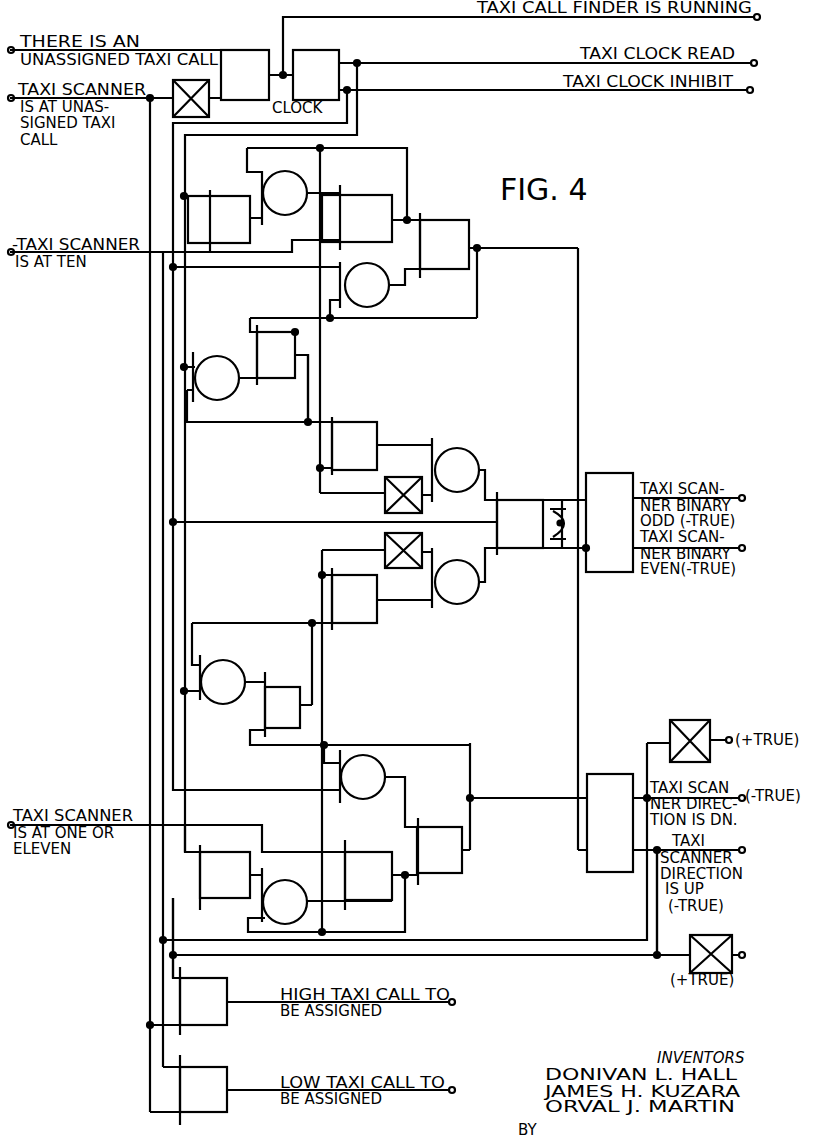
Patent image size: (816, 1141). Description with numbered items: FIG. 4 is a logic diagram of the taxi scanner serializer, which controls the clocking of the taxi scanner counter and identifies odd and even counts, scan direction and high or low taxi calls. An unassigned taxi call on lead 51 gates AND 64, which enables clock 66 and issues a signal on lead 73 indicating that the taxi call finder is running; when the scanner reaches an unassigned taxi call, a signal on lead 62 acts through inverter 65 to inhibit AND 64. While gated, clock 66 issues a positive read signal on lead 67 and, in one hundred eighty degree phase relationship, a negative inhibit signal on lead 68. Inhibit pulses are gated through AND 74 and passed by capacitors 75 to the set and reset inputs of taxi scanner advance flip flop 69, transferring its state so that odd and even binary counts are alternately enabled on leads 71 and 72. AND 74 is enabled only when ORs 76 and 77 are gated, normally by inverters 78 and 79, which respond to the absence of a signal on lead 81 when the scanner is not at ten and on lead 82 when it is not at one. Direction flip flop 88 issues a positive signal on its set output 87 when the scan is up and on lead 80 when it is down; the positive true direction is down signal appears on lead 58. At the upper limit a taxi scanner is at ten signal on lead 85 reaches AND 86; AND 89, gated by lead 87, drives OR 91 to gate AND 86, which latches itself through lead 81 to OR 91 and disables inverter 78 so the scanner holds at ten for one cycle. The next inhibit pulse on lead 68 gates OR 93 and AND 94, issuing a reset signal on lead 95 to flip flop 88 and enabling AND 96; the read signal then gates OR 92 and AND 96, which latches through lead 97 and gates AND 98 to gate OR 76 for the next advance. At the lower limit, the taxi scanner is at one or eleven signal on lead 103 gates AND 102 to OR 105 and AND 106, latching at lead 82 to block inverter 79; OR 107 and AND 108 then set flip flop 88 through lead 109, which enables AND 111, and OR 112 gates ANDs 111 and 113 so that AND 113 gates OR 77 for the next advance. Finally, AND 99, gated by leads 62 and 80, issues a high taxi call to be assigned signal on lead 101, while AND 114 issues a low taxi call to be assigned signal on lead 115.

The lead 51 is at (176, 52).
The AND 64 is at (245, 75).
The inverter 65 is at (209, 105).
The clock 66 is at (330, 58).
The lead 73 is at (353, 19).
The lead 67 is at (188, 290).
The lead 68 is at (233, 790).
The lead 62 is at (148, 995).
The lead 81 is at (323, 385).
The AND 89 is at (221, 221).
The OR 91 is at (285, 193).
The AND 86 is at (357, 217).
The AND 94 is at (444, 245).
The OR 93 is at (364, 285).
The lead 95 is at (578, 818).
The lead 85 is at (147, 256).
The set output 87 is at (163, 1030).
The AND 96 is at (276, 355).
The OR 92 is at (216, 377).
The lead 97 is at (308, 385).
The AND 98 is at (354, 446).
The inverter 78 is at (382, 480).
The OR 76 is at (455, 470).
The capacitors 75 is at (548, 503).
The AND 74 is at (520, 523).
The taxi scanner advance flip flop 69 is at (609, 522).
The lead 72 is at (742, 495).
The lead 71 is at (745, 552).
The inverter 79 is at (390, 570).
The OR 77 is at (455, 578).
The AND 113 is at (354, 599).
The OR 112 is at (222, 679).
The AND 111 is at (282, 704).
The lead 82 is at (405, 888).
The OR 107 is at (362, 776).
The lead 109 is at (483, 797).
The lead 58 is at (712, 730).
The direction flip flop 88 is at (610, 823).
The lead 80 is at (535, 955).
The lead 103 is at (145, 824).
The AND 102 is at (225, 877).
The AND 106 is at (368, 875).
The AND 108 is at (439, 851).
The OR 105 is at (284, 896).
The AND 99 is at (203, 1001).
The lead 101 is at (227, 1002).
The AND 114 is at (203, 1090).
The lead 115 is at (227, 1090).